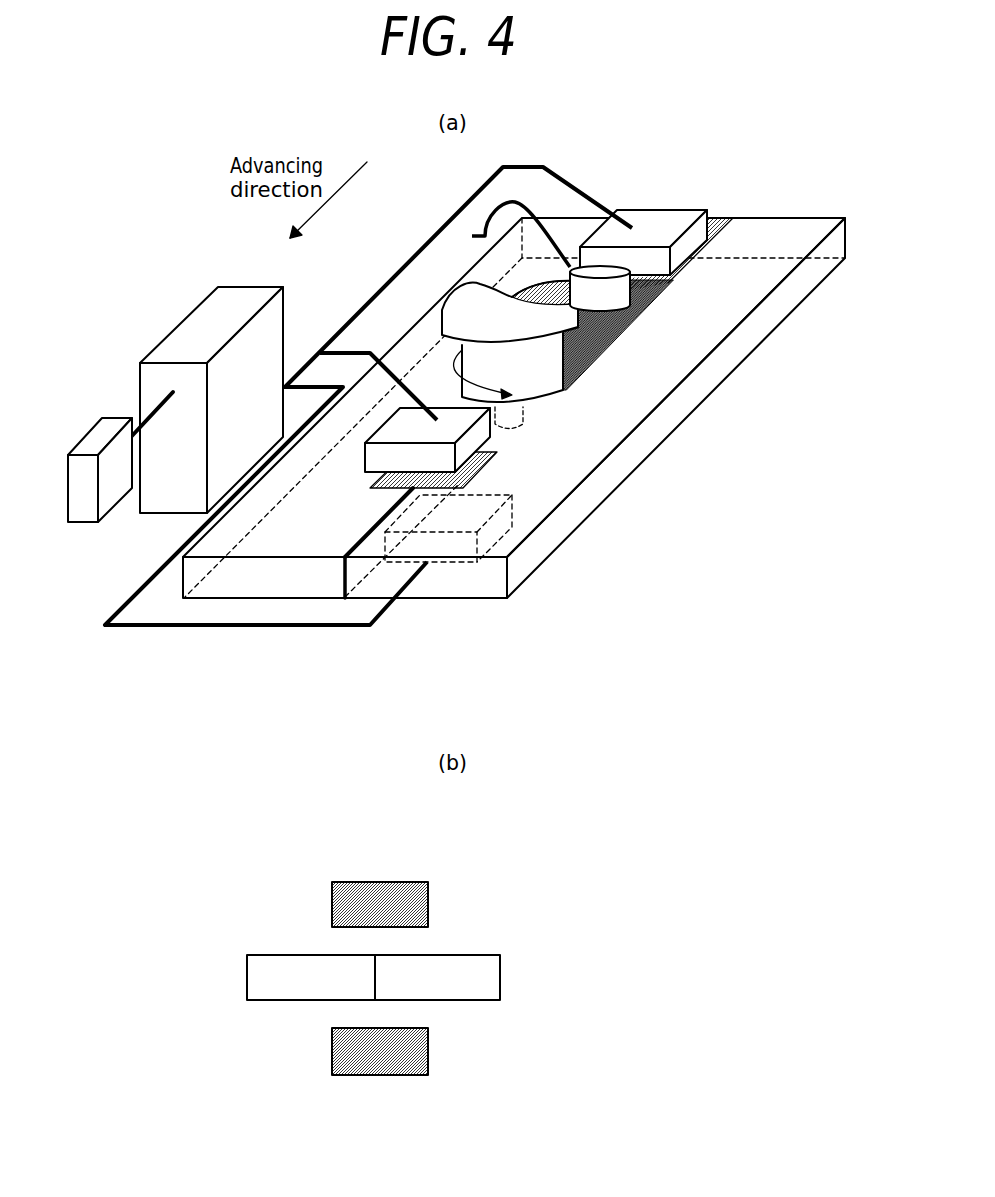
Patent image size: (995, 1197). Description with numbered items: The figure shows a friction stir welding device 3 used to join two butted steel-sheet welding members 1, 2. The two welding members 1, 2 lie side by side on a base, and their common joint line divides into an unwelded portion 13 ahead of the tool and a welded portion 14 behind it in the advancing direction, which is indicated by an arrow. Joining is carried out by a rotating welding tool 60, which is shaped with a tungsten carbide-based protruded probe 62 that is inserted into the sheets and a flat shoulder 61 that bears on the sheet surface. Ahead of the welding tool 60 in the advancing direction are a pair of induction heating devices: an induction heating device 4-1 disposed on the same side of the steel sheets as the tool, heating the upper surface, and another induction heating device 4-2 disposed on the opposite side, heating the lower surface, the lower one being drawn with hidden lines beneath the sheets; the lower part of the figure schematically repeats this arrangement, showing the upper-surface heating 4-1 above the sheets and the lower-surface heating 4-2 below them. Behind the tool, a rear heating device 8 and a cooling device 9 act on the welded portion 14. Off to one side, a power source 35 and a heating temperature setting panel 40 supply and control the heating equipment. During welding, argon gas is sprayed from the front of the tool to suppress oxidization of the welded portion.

The welding member 1 is at (233, 580).
The welding member 2 is at (470, 583).
The unwelded portion 13 is at (343, 582).
The welding device 3 is at (467, 297).
The welding tool (rotor) 60 is at (560, 395).
The shoulder 61 is at (548, 405).
The probe 62 is at (513, 420).
The rear heating device 8 is at (680, 250).
The cooling device 9 is at (620, 297).
The welded portion 14 is at (720, 215).
The power source 35 is at (208, 318).
The heating temperature setting panel 40 is at (100, 437).
The induction heating device (upper surface side) 4-1 is at (497, 458).
The induction heating device (lower surface side) 4-2 is at (510, 532).